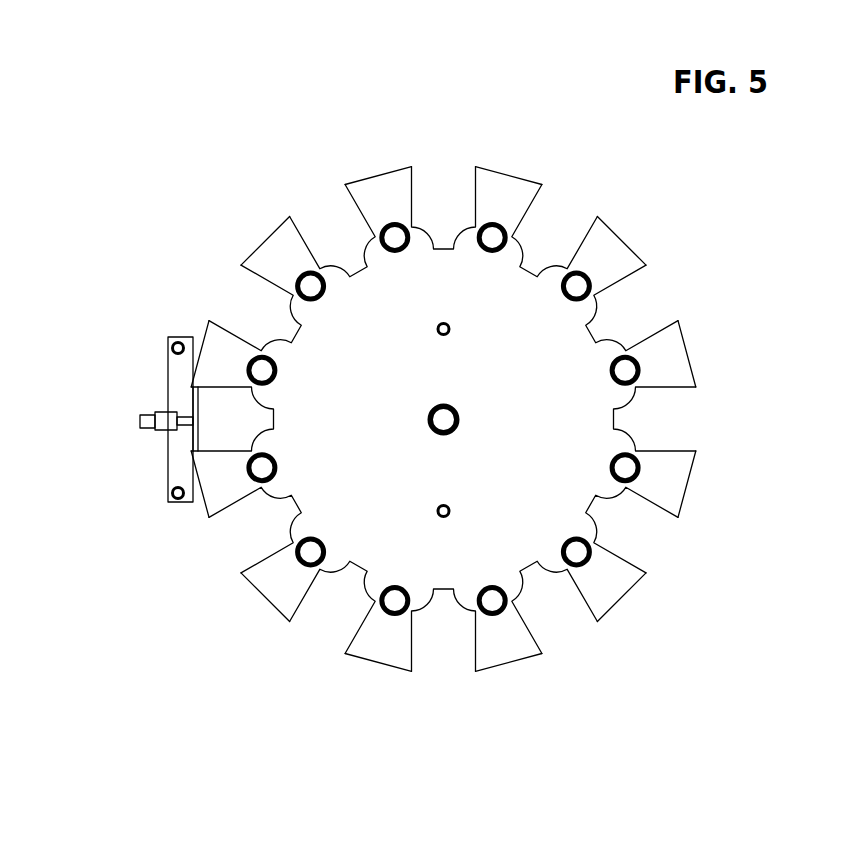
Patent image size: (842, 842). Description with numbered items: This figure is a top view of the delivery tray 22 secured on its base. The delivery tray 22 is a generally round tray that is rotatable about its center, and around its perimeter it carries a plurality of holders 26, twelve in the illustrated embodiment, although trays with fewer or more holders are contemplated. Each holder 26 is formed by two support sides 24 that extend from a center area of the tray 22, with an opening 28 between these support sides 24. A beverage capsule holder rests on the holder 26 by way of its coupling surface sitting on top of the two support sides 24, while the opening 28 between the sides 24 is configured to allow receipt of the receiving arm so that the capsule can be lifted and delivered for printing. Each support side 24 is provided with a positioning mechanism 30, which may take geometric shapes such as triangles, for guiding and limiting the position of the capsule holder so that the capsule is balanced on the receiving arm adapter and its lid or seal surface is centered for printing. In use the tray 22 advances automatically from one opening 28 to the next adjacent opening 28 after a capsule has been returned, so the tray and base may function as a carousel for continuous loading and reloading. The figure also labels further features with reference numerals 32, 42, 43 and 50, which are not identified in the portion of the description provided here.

The delivery tray 22 is at (456, 430).
The support sides 24 is at (272, 588).
The holder 26 is at (457, 151).
The opening 28 is at (338, 608).
The positioning mechanism 30 is at (654, 448).
The hole 32 is at (392, 234).
The central bore 42 is at (459, 420).
The pin hole 43 is at (448, 333).
The attachment fixture 50 is at (215, 420).